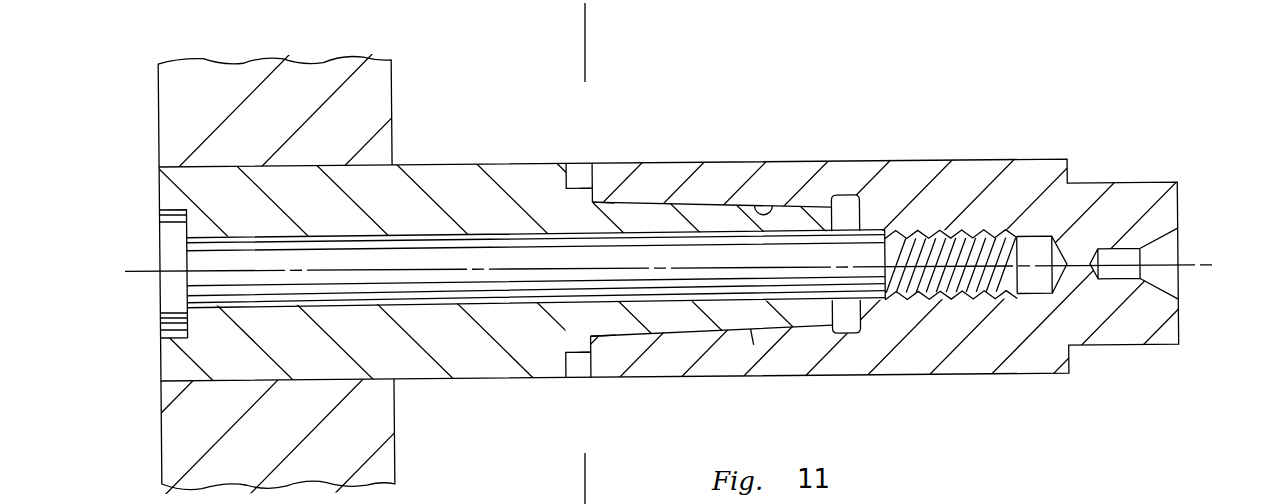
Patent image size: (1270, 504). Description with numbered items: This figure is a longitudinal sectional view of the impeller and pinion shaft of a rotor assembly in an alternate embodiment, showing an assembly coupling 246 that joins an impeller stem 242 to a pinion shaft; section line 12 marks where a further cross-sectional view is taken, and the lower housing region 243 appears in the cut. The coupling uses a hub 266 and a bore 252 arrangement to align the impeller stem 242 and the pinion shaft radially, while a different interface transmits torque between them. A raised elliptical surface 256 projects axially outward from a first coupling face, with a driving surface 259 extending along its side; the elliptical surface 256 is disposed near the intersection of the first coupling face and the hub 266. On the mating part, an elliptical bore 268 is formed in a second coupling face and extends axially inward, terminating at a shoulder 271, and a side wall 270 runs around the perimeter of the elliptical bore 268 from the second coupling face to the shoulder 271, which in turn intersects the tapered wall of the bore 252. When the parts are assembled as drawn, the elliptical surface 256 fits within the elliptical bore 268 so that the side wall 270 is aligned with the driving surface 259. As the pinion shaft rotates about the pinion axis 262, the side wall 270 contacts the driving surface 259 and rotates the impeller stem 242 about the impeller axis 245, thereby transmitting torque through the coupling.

The section line of FIG. 12 is at (573, 45).
The impeller stem 242 is at (432, 156).
The lower housing member 243 is at (457, 382).
The impeller axis 245 is at (142, 268).
The assembly coupling 246 is at (621, 86).
The bore 252 is at (794, 203).
The elliptical surface 256 is at (612, 201).
The driving surface 259 is at (578, 186).
The pinion axis 262 is at (1197, 263).
The hub 266 is at (750, 334).
The elliptical bore 268 is at (583, 189).
The side wall 270 is at (582, 196).
The shoulder 271 is at (587, 194).